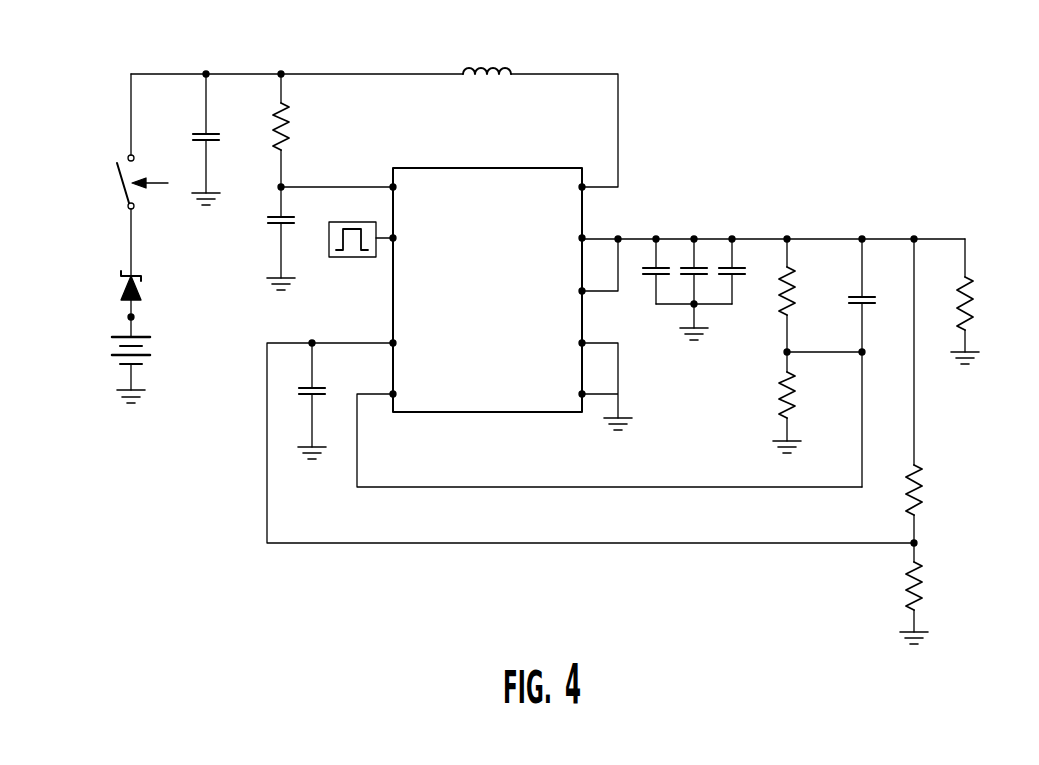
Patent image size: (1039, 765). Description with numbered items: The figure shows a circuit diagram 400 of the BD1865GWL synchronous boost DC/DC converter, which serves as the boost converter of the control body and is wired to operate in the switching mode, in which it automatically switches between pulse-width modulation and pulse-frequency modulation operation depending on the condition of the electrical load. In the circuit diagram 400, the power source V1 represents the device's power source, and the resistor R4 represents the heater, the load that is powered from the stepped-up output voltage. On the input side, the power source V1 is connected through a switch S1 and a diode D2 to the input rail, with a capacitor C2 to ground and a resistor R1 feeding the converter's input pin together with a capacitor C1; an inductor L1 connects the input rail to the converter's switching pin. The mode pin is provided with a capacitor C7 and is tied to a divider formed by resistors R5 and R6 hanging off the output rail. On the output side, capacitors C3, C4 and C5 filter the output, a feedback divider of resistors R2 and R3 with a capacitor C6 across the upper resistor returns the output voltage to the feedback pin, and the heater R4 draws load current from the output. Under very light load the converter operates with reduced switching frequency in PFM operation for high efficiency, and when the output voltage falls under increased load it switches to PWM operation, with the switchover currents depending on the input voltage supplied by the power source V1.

The circuit diagram 400 is at (610, 225).
The switch S1 is at (134, 141).
The zener diode D2 is at (143, 273).
The power source V1 is at (120, 370).
The input capacitor C2 is at (212, 139).
The resistor R1 is at (295, 130).
The capacitor C1 is at (276, 238).
The inductor L1 is at (487, 57).
The mode pin capacitor C7 is at (318, 399).
The output capacitor C3 is at (661, 273).
The output capacitor C4 is at (699, 273).
The output capacitor C5 is at (737, 273).
The feedback resistor R2 is at (800, 295).
The feedback resistor R3 is at (797, 402).
The feed-forward capacitor C6 is at (868, 363).
The heater R4 is at (975, 301).
The mode divider resistor R5 is at (929, 391).
The mode divider resistor R6 is at (926, 593).